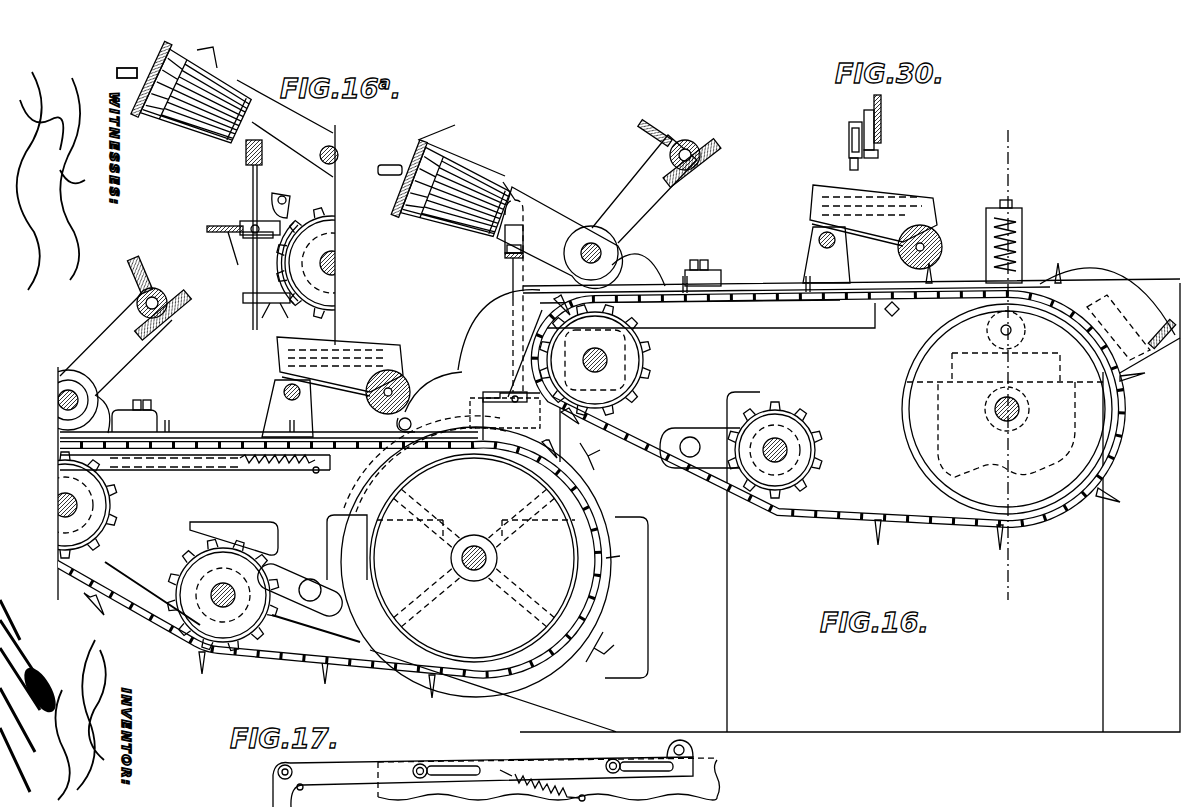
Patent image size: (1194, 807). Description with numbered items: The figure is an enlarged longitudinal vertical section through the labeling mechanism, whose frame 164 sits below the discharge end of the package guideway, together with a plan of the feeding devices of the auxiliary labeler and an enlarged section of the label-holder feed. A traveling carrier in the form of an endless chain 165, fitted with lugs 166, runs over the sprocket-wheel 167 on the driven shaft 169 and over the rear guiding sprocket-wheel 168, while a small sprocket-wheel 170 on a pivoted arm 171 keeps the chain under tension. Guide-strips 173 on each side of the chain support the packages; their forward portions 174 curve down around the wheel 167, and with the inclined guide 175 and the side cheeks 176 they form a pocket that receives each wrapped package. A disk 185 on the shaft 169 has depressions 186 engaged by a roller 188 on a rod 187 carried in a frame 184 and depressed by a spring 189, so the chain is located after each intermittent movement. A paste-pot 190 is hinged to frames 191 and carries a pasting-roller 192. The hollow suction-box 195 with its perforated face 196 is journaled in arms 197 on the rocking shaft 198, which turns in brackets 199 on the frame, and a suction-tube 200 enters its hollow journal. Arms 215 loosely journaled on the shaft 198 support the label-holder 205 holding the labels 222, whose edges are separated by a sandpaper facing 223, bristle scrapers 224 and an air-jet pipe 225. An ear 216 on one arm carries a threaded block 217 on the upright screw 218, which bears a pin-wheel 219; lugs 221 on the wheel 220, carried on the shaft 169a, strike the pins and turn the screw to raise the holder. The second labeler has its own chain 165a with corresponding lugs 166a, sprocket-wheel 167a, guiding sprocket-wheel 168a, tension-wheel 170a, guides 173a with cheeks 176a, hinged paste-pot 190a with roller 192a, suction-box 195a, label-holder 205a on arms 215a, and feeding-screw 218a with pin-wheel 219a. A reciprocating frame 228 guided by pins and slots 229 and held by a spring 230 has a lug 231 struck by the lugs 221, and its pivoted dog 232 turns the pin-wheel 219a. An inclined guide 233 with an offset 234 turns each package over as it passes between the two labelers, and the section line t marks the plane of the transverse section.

In FIG. 16, the frame of the labeling mechanism 164 is at (825, 507).
In FIG. 17, the frame of the labeling mechanism 164 is at (549, 779).
In FIG. 16, the traveling carrier 165 is at (760, 296).
In FIG. 16, the lugs 166 is at (933, 284).
In FIG. 16, the sprocket-wheel 167 is at (895, 425).
In FIG. 16, the sprocket-wheel 168 is at (630, 358).
In FIG. 16, the shaft 169 is at (1019, 414).
In FIG. 16, the small sprocket-wheel 170 is at (810, 425).
In FIG. 16, the pivoted arm 171 is at (700, 448).
In FIG. 16, the guide-strips 173 is at (727, 286).
In FIG. 16, the curved guide portions 174 is at (1115, 292).
In FIG. 16, the inclined guide 175 is at (1131, 327).
In FIG. 16, the side cheeks 176 is at (1150, 300).
In FIG. 16, the frame 184 is at (1022, 238).
In FIG. 16, the disk 185 is at (1003, 436).
In FIG. 16, the depressions 186 is at (952, 372).
In FIG. 16, the rod 187 is at (1012, 202).
In FIG. 16, the roller 188 is at (987, 337).
In FIG. 16, the spring 189 is at (1016, 220).
In FIG. 16, the paste-pot 190 is at (872, 200).
In FIG. 16, the frames 191 is at (826, 255).
In FIG. 16, the pasting-roller 192 is at (940, 240).
In FIG. 16, the hollow suction-box 195 is at (692, 143).
In FIG. 16, the perforated face 196 is at (708, 168).
In FIG. 16, the arms 197 is at (644, 189).
In FIG. 16, the rocking shaft 198 is at (590, 243).
In FIG. 16, the brackets 199 is at (638, 270).
In FIG. 16, the suction-tube 200 is at (655, 121).
In FIG. 16, the label-holder 205 is at (455, 152).
In FIG. 16, the arms 215 is at (559, 237).
In FIG. 30, the arms 215 is at (881, 120).
In FIG. 16, the ear 216 is at (500, 238).
In FIG. 30, the ear 216 is at (874, 138).
In FIG. 16, the threaded block 217 is at (505, 258).
In FIG. 30, the threaded block 217 is at (849, 136).
In FIG. 16, the upright screw 218 is at (512, 286).
In FIG. 30, the upright screw 218 is at (850, 163).
In FIG. 16, the pin-wheel 219 is at (500, 392).
In FIG. 16A, the wheel 220 is at (605, 598).
In FIG. 16A, the lugs 221 is at (598, 468).
In FIG. 16, the labels 222 is at (470, 190).
In FIG. 16, the facing 223 is at (510, 196).
In FIG. 16, the scrapers 224 is at (442, 148).
In FIG. 16, the pipe 225 is at (392, 165).
In FIG. 16A, the horizontally-reciprocating frame 228 is at (300, 195).
In FIG. 17, the horizontally-reciprocating frame 228 is at (491, 771).
In FIG. 17, the pins and slots 229 is at (430, 765).
In FIG. 16A, the spring 230 is at (290, 470).
In FIG. 17, the spring 230 is at (540, 778).
In FIG. 16A, the lug 231 is at (398, 424).
In FIG. 17, the lug 231 is at (693, 750).
In FIG. 16A, the pivoted dog 232 is at (255, 224).
In FIG. 17, the pivoted dog 232 is at (273, 785).
In FIG. 16, the inclined guide 233 is at (520, 345).
In FIG. 16, the offset 234 is at (512, 397).
In FIG. 16A, the endless chain 165a is at (212, 478).
In FIG. 16A, the spikes 166a is at (320, 569).
In FIG. 16A, the sprocket-wheel 167a is at (378, 520).
In FIG. 16A, the guiding sprocket-wheel 168a is at (100, 503).
In FIG. 16A, the driving-shaft 169a is at (488, 558).
In FIG. 16A, the tension-wheel 170a is at (178, 600).
In FIG. 16A, the guides 173a is at (248, 440).
In FIG. 16, the guard arc 176a is at (495, 320).
In FIG. 16A, the hinged paste-pot 190a is at (340, 345).
In FIG. 16A, the roller 192a is at (366, 398).
In FIG. 16A, the suction-box 195a is at (114, 344).
In FIG. 16A, the label-holder 205a is at (198, 99).
In FIG. 16A, the arm 215a is at (287, 128).
In FIG. 16A, the feeding-screw 218a is at (252, 180).
In FIG. 16A, the wheel 219a is at (252, 236).
In FIG. 16, the section line t is at (1004, 362).